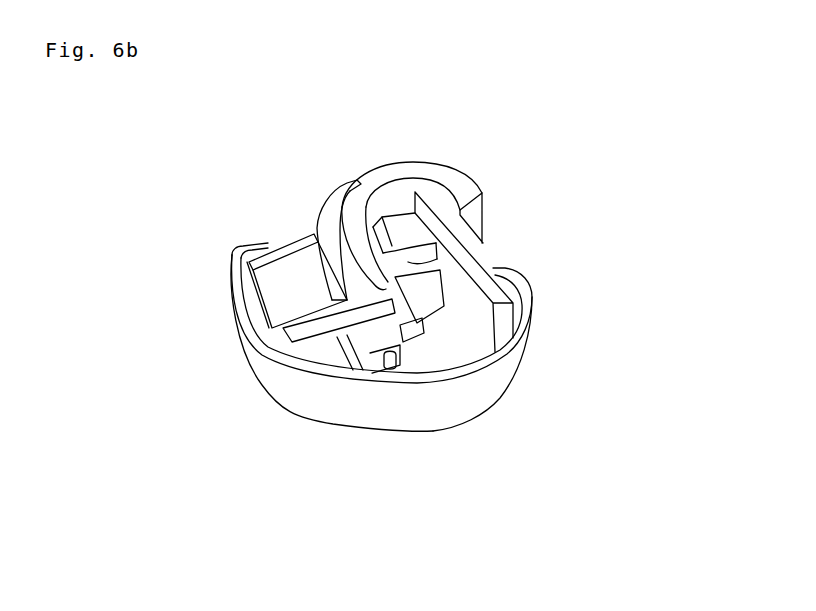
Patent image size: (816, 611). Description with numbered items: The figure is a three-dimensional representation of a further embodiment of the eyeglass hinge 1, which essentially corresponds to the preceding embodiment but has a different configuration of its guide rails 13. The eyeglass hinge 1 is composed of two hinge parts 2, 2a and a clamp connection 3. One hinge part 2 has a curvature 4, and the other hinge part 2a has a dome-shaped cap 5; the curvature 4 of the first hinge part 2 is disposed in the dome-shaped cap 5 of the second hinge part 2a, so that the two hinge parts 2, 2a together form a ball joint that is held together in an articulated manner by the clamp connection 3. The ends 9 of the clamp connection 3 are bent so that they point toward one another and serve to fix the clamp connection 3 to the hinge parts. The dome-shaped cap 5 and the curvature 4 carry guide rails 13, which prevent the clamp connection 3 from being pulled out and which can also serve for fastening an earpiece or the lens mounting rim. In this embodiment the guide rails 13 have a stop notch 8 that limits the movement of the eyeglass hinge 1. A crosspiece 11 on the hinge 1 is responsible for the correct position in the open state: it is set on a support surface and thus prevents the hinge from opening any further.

The eyeglass hinge 1 is at (722, 215).
The hinge part 2 is at (483, 247).
The hinge part 2a is at (298, 248).
The clamp connection 3 is at (352, 393).
The curvature 4 is at (413, 168).
The dome-shaped cap 5 is at (338, 195).
The stop notch 8 is at (449, 298).
The ends 9 is at (256, 248).
The crosspiece 11 is at (418, 283).
The guide rails 13 is at (390, 283).